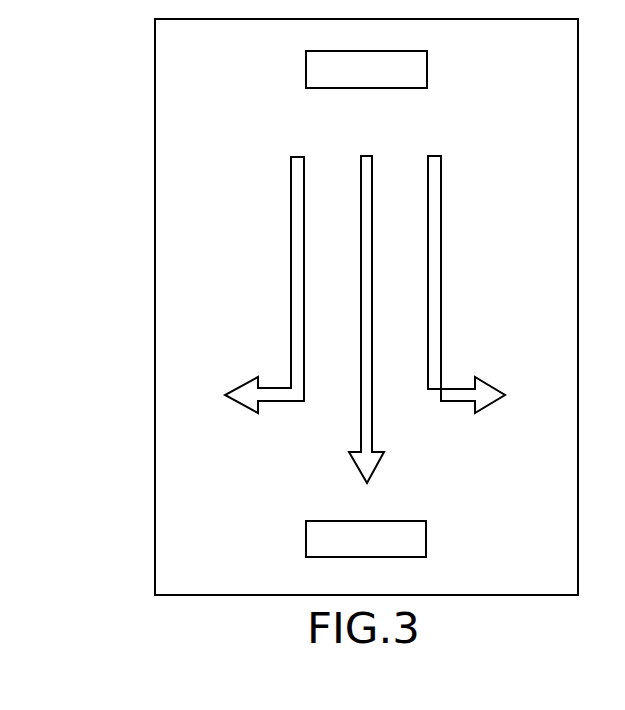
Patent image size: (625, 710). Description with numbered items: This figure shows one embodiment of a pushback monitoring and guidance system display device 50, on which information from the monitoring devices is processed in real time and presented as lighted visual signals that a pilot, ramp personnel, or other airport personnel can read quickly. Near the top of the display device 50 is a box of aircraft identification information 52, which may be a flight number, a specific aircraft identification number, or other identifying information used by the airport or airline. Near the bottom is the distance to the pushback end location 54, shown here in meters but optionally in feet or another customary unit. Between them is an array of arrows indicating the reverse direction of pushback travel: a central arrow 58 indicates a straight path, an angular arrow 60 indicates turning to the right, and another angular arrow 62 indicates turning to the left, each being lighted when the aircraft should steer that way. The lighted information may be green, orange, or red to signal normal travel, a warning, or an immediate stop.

The display device 50 is at (140, 373).
The aircraft identification information 52 is at (427, 70).
The distance to pushback end location 54 is at (426, 540).
The arrow 58 is at (366, 328).
The right turn arrow 60 is at (441, 273).
The left turn arrow 62 is at (291, 270).